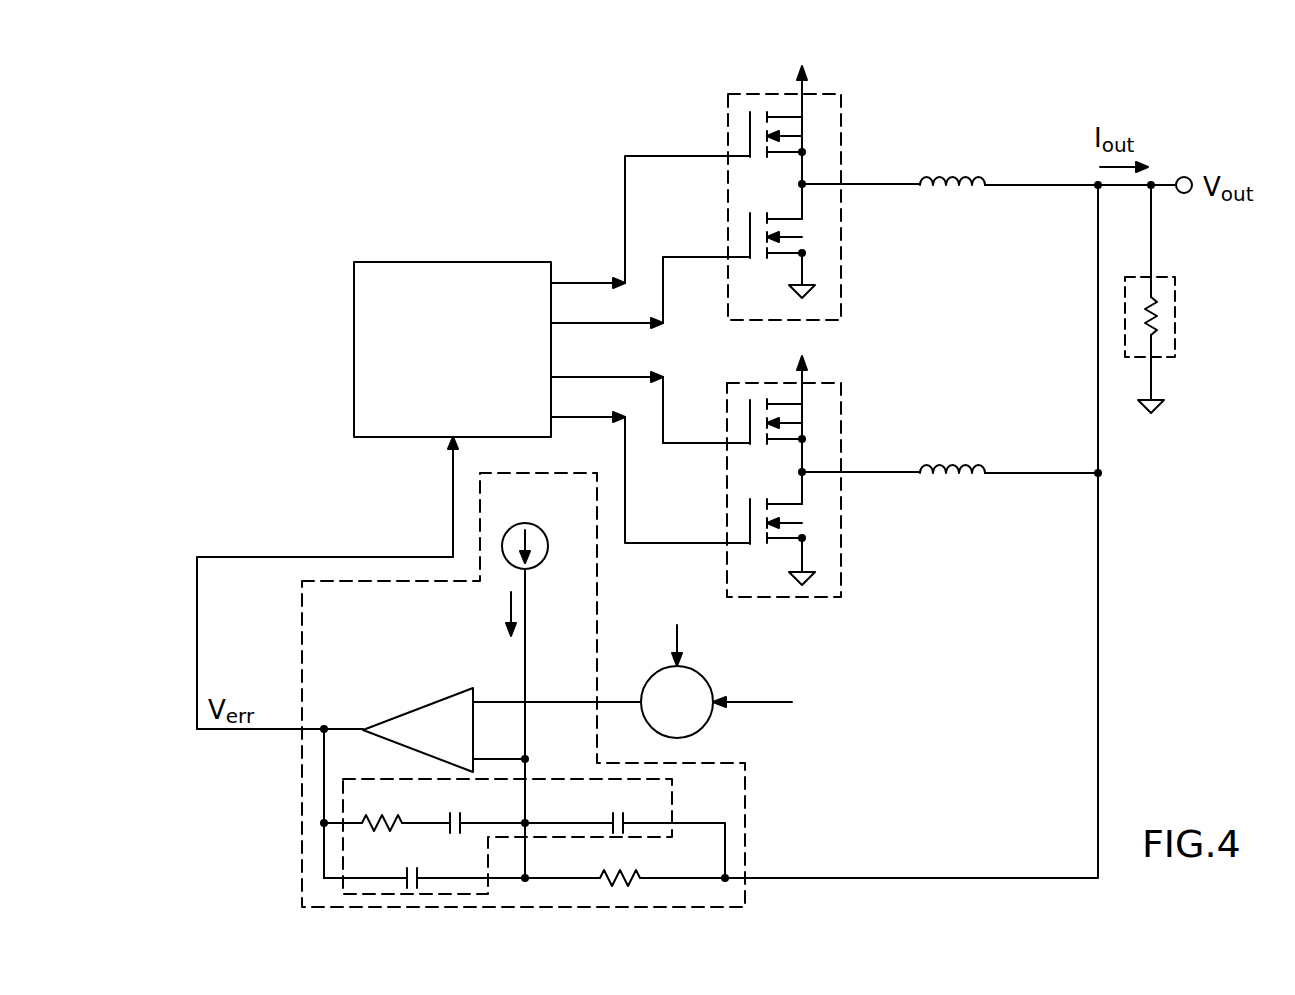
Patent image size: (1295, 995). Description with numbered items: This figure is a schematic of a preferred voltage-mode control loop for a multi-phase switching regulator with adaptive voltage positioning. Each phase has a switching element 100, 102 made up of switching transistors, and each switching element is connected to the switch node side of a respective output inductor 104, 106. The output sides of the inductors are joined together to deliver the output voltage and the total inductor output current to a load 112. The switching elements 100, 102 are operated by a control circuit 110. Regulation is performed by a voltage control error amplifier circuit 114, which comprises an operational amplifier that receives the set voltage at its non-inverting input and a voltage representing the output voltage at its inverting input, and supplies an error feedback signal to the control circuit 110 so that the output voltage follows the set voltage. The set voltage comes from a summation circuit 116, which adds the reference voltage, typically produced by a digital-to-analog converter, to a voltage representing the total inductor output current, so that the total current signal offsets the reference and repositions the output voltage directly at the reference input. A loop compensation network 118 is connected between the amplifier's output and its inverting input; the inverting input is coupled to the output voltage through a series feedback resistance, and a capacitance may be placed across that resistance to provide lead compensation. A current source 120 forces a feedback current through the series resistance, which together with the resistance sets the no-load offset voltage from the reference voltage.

The switching element 100 is at (728, 120).
The switching element 102 is at (727, 407).
The output inductor 104 is at (960, 210).
The output inductor 106 is at (960, 497).
The control circuit 110 is at (458, 262).
The load 112 is at (1175, 302).
The voltage control error amplifier circuit 114 is at (538, 690).
The summation circuit 116 is at (697, 733).
The loop compensation network 118 is at (405, 778).
The current source 120 is at (520, 524).